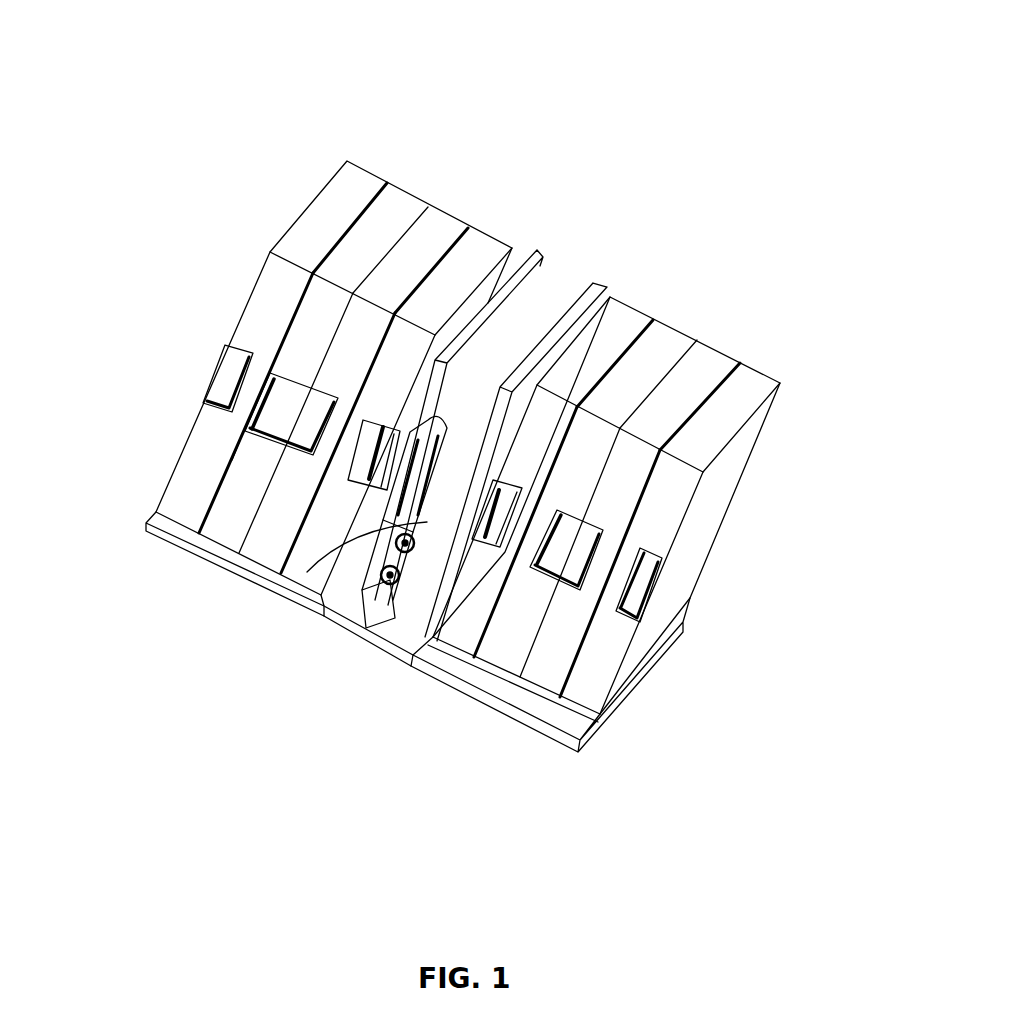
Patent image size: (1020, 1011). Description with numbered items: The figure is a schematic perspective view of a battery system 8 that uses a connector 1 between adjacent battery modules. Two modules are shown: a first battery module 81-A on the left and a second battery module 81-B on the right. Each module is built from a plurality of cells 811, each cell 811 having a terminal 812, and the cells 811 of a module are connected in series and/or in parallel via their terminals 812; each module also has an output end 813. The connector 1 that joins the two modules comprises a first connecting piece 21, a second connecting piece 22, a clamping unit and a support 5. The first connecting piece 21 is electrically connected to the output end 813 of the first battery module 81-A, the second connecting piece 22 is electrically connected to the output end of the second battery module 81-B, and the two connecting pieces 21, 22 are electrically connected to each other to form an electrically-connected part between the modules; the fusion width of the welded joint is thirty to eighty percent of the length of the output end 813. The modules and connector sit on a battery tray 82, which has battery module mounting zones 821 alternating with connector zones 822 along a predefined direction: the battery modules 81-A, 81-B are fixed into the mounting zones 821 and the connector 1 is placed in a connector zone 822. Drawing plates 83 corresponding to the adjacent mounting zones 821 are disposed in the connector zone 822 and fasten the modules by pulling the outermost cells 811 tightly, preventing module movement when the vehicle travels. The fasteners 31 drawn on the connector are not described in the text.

The battery system 8 is at (388, 122).
The first battery module 81-A is at (460, 218).
The second battery module 81-B is at (720, 345).
The cells 811 is at (627, 297).
The terminal 812 is at (585, 545).
The output end 813 is at (343, 467).
The battery tray 82 is at (155, 537).
The battery module mounting zones 821 is at (187, 542).
The connector zones 822 is at (352, 620).
The drawing plates 83 is at (600, 282).
The connector 1 is at (312, 555).
The support 5 is at (383, 603).
The first connecting piece 21 is at (384, 433).
The second connecting piece 22 is at (497, 481).
The fastening screws 31 is at (394, 634).